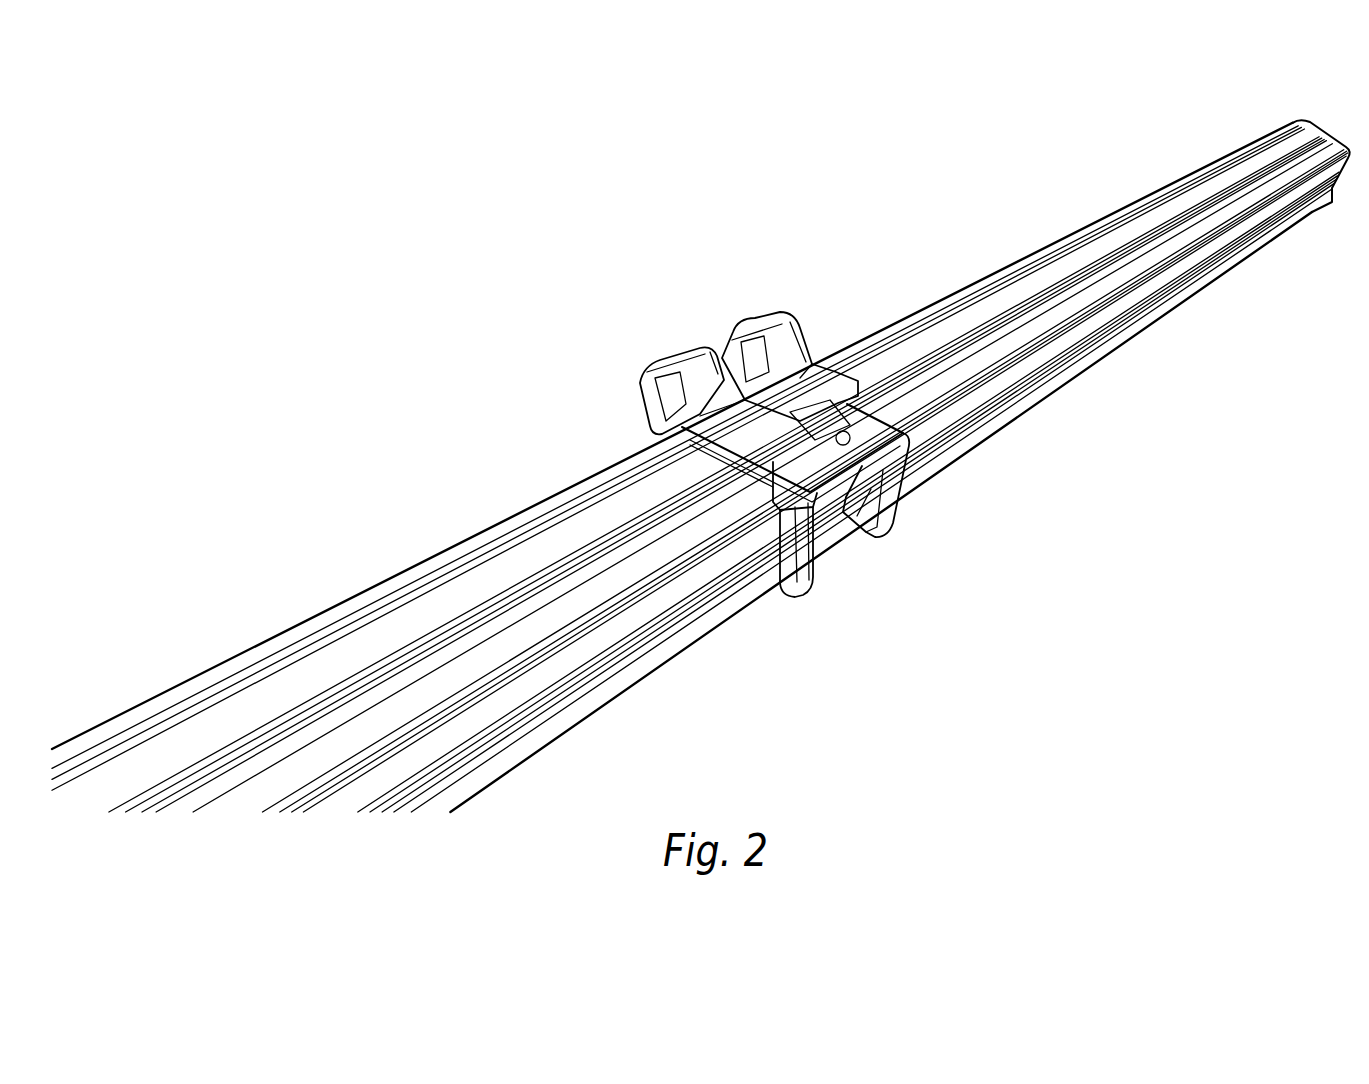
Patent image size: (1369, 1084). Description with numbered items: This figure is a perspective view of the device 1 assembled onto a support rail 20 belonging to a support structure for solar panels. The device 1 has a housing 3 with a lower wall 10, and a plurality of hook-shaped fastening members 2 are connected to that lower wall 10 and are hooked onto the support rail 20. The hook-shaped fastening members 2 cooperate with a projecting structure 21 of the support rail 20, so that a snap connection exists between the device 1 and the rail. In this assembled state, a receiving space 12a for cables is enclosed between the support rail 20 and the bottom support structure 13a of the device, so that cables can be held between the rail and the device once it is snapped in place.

The device 1 is at (620, 357).
The hook-shaped fastening members 2 is at (772, 513).
The housing 3 is at (735, 400).
The lower wall 10 is at (712, 452).
The receiving space 12a is at (782, 568).
The bottom support structure 13a is at (809, 607).
The support rail 20 is at (440, 546).
The projecting structure 21 is at (578, 658).